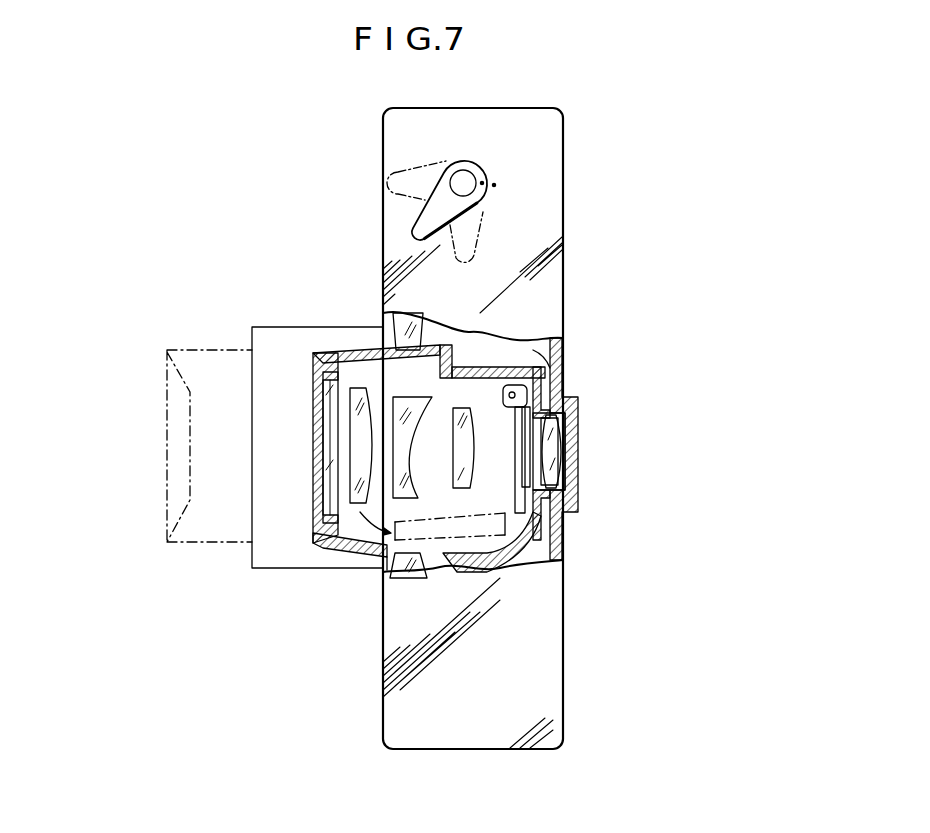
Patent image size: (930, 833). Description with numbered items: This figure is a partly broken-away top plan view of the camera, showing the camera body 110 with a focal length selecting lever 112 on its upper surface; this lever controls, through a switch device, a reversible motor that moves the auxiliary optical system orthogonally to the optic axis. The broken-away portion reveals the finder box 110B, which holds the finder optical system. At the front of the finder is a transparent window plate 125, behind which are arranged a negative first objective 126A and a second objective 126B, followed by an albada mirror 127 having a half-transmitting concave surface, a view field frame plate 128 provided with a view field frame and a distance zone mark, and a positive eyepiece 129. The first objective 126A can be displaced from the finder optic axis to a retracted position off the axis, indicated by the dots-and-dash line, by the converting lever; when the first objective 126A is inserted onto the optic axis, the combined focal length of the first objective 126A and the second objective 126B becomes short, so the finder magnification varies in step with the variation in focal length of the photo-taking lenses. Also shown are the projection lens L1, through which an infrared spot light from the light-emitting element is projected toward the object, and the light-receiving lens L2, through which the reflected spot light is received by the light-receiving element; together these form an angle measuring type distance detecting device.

The camera body 110 is at (563, 188).
The finder box 110B is at (533, 358).
The focal length selecting lever 112 is at (415, 229).
The transparent window plate 125 is at (318, 515).
The first objective 126A is at (355, 452).
The second objective 126B is at (407, 457).
The albada mirror 127 is at (457, 465).
The view field frame plate 128 is at (537, 457).
The eyepiece 129 is at (558, 465).
The projection lens L1 is at (412, 558).
The light-receiving lens L2 is at (403, 322).